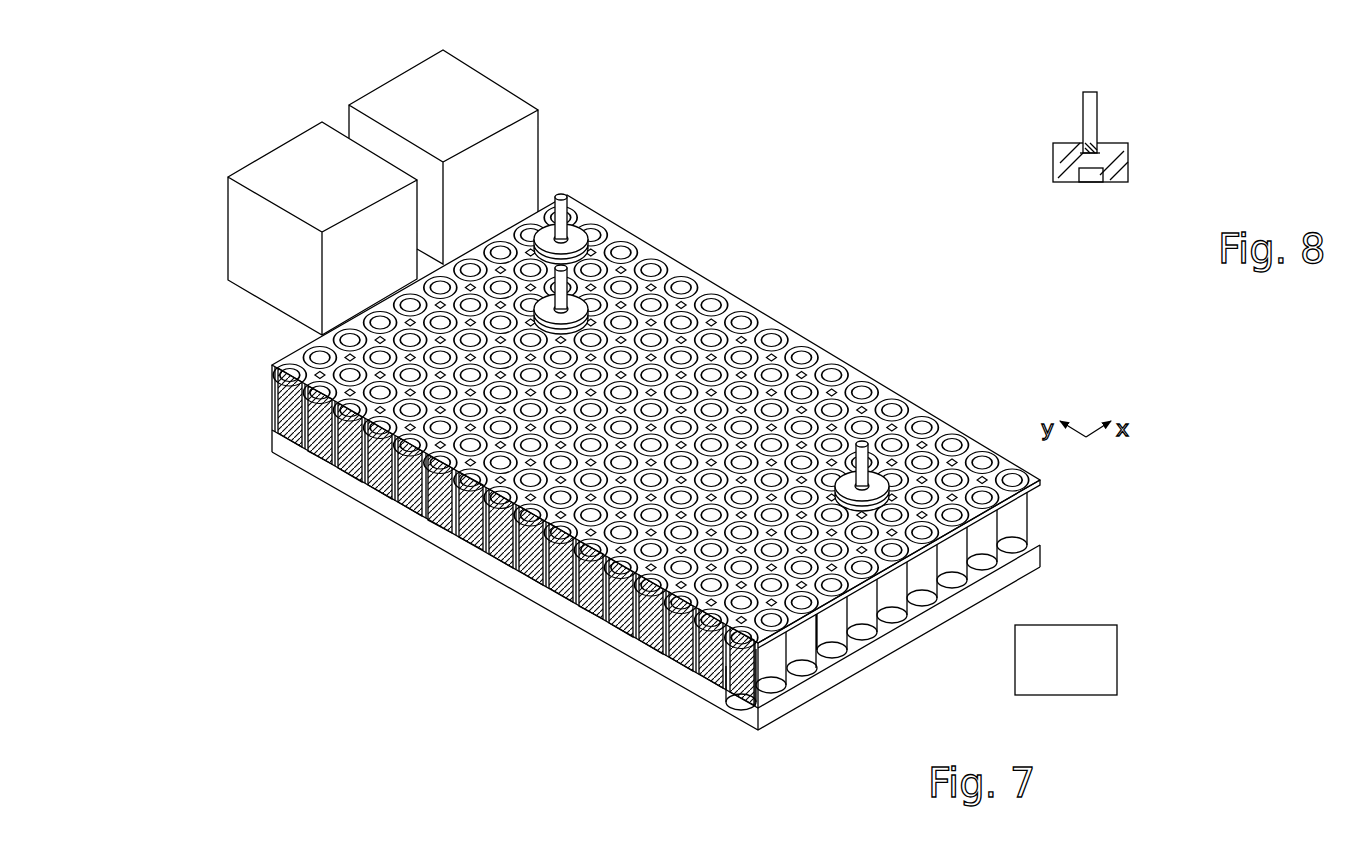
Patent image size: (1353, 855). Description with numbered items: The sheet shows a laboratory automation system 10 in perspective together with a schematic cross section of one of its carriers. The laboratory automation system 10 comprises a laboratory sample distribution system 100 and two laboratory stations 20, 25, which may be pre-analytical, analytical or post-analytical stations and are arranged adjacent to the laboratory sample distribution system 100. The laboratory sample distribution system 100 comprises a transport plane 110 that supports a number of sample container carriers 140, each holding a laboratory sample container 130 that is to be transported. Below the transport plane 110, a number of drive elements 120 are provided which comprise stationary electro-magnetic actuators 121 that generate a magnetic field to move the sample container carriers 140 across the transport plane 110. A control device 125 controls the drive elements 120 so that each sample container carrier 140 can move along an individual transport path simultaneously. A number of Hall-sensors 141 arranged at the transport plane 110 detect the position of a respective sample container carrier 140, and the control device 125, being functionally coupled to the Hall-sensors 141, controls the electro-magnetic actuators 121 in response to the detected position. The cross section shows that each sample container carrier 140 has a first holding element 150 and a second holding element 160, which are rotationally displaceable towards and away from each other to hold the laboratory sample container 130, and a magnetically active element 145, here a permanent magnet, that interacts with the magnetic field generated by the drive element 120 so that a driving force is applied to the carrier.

In FIG. 7, the laboratory automation system 10 is at (476, 688).
In FIG. 7, the laboratory station 20 is at (280, 165).
In FIG. 7, the laboratory station 25 is at (403, 96).
In FIG. 7, the laboratory sample distribution system 100 is at (408, 623).
In FIG. 7, the transport plane 110 is at (343, 360).
In FIG. 7, the drive element 120 is at (734, 702).
In FIG. 7, the electro-magnetic actuator 121 is at (735, 668).
In FIG. 7, the control device 125 is at (1090, 672).
In FIG. 7, the laboratory sample container 130 is at (870, 462).
In FIG. 8, the laboratory sample container 130 is at (1095, 104).
In FIG. 7, the sample container carrier 140 is at (585, 323).
In FIG. 8, the sample container carrier 140 is at (1128, 153).
In FIG. 7, the Hall-sensor 141 is at (775, 357).
In FIG. 8, the magnetically active element 145 is at (1092, 182).
In FIG. 8, the first holding element 150 is at (1083, 135).
In FIG. 8, the second holding element 160 is at (1098, 135).